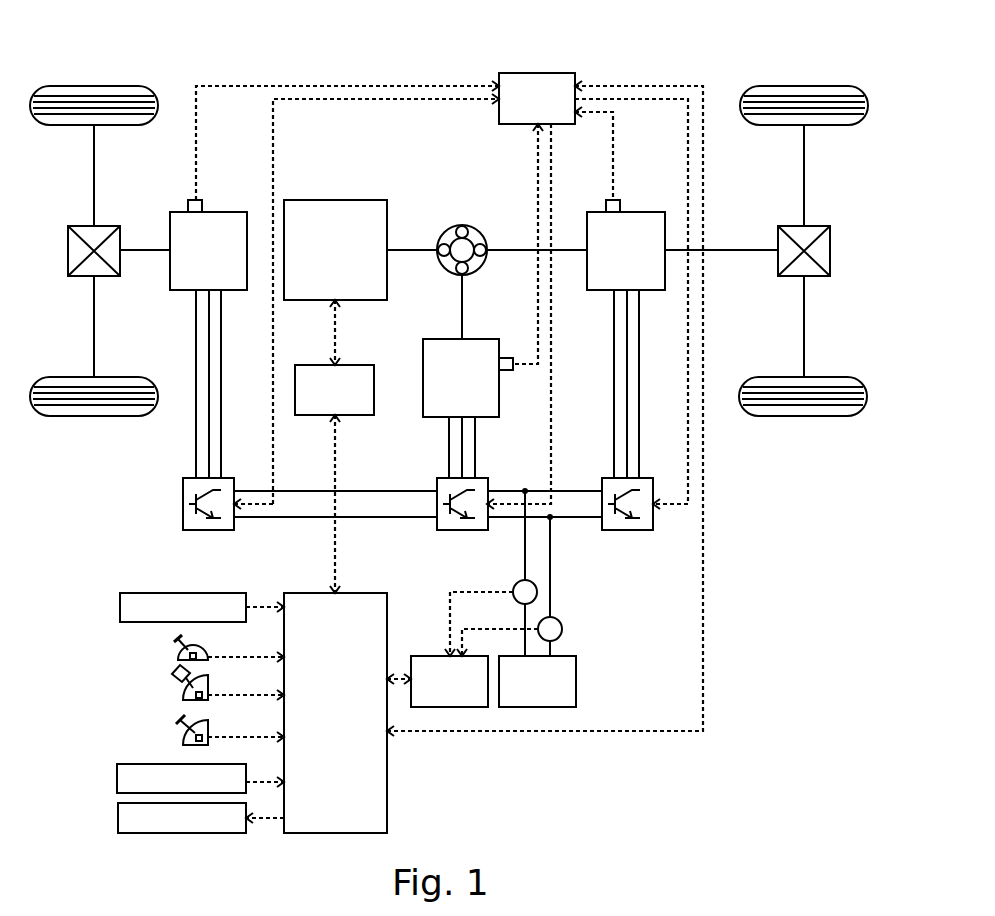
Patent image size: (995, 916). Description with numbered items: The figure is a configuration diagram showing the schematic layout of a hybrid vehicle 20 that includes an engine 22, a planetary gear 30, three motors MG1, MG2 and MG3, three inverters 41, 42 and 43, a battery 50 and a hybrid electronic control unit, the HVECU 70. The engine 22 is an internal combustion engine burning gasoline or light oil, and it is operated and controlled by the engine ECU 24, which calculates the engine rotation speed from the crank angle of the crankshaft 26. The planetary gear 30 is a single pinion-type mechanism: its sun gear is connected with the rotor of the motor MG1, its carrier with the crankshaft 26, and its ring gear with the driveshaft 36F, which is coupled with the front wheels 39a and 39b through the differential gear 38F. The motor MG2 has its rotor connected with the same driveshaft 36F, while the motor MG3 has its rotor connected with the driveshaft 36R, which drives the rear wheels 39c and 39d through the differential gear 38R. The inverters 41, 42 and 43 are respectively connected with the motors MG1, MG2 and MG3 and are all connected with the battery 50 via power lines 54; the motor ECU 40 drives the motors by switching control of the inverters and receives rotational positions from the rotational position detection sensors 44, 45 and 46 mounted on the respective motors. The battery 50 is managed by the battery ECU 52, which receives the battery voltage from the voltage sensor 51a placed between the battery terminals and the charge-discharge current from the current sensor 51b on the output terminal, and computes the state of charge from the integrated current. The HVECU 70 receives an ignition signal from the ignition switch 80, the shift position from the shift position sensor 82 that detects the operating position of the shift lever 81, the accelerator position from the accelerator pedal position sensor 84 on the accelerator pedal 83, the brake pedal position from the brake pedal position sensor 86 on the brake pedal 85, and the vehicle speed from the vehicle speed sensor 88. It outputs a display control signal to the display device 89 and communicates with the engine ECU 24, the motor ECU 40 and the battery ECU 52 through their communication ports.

The hybrid vehicle 20 is at (664, 48).
The engine 22 is at (362, 198).
The engine electronic control unit 24 is at (362, 363).
The crankshaft 26 is at (412, 248).
The planetary gear 30 is at (462, 224).
The driveshaft 36R is at (140, 248).
The driveshaft 36F is at (754, 248).
The differential gear 38R is at (78, 224).
The differential gear 38F is at (823, 224).
The front wheel 39a is at (806, 85).
The front wheel 39b is at (803, 418).
The rear wheel 39c is at (93, 85).
The rear wheel 39d is at (93, 418).
The motor electronic control unit 40 is at (552, 72).
The inverter 41 is at (483, 476).
The inverter 42 is at (648, 476).
The inverter 43 is at (229, 476).
The rotational position detection sensor 44 is at (506, 356).
The rotational position detection sensor 45 is at (607, 198).
The rotational position detection sensor 46 is at (190, 198).
The battery 50 is at (577, 680).
The voltage sensor 51a is at (562, 629).
The current sensor 51b is at (537, 592).
The battery ECU 52 is at (436, 654).
The power lines 54 is at (525, 543).
The hybrid electronic control unit 70 is at (363, 591).
The ignition switch 80 is at (120, 604).
The shift lever 81 is at (178, 648).
The shift position sensor 82 is at (190, 657).
The accelerator pedal 83 is at (183, 684).
The accelerator pedal position sensor 84 is at (195, 697).
The brake pedal 85 is at (183, 727).
The brake pedal position sensor 86 is at (195, 741).
The vehicle speed sensor 88 is at (117, 779).
The display device 89 is at (118, 817).
The motor MG1 is at (437, 337).
The motor MG2 is at (641, 210).
The motor MG3 is at (233, 210).